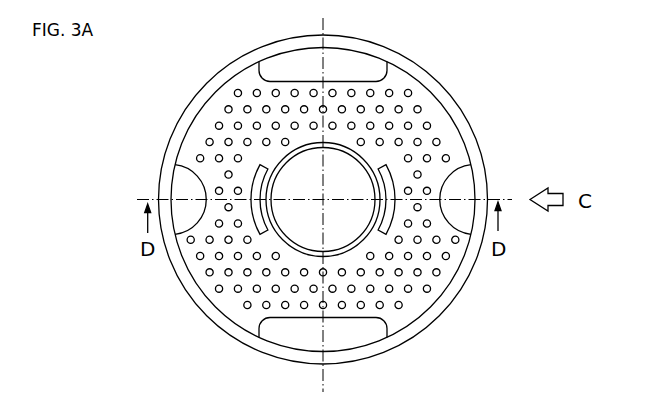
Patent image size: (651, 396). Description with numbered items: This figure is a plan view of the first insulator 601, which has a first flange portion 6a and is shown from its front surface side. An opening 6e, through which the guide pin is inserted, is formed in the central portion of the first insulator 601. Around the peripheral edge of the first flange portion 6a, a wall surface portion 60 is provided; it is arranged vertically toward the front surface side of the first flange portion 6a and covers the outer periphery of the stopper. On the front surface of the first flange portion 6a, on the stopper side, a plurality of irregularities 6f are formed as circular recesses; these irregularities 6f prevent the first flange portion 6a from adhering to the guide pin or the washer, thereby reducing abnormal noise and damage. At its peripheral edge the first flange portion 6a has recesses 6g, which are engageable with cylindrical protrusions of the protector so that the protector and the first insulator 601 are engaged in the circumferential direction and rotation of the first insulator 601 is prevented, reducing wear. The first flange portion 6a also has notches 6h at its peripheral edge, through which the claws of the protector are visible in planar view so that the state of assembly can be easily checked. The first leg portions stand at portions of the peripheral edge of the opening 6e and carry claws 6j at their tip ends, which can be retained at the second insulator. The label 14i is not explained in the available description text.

The first insulator 601 is at (171, 86).
The mounting portion 14i is at (120, 104).
The wall surface portion 60 is at (466, 112).
The first flange portion 6a is at (439, 284).
The opening 6e is at (337, 150).
The irregularities 6f is at (421, 106).
The recesses 6g is at (448, 178).
The notches 6h is at (297, 81).
The claws 6j is at (273, 172).